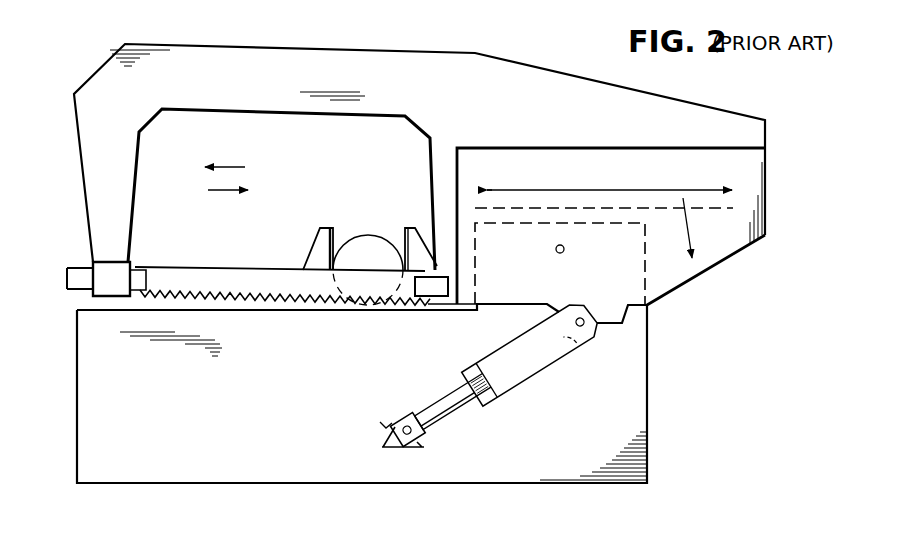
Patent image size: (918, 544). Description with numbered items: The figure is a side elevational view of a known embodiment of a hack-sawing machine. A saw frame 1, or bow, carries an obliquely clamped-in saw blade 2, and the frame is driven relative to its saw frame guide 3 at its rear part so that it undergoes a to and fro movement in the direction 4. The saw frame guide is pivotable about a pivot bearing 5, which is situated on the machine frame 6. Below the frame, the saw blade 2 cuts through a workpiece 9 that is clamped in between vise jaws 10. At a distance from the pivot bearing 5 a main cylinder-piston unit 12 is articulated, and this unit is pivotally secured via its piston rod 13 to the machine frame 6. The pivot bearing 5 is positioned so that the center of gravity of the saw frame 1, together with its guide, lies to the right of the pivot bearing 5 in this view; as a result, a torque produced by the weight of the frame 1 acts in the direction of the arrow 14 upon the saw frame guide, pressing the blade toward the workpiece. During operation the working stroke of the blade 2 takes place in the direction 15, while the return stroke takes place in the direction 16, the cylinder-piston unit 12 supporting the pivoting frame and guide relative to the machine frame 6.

The saw frame 1 is at (376, 70).
The saw blade 2 is at (187, 277).
The saw frame guide 3 is at (754, 242).
The direction of to and fro movement 4 is at (611, 192).
The pivot bearing 5 is at (566, 254).
The machine frame 6 is at (231, 458).
The workpiece 9 is at (362, 238).
The vise jaws 10 is at (308, 253).
The main cylinder-piston unit 12 is at (552, 342).
The piston rod 13 is at (394, 431).
The arrow 14 is at (690, 226).
The working stroke direction 15 is at (230, 167).
The return stroke direction 16 is at (208, 190).